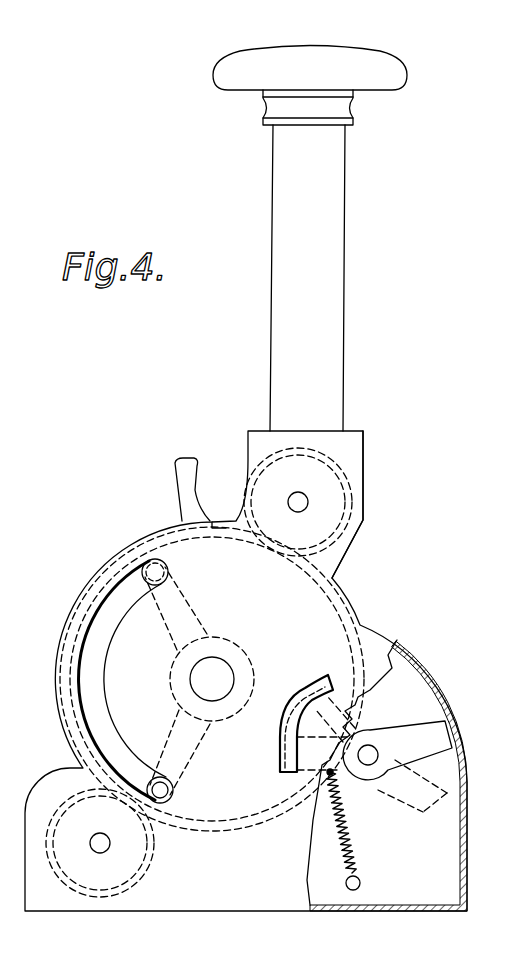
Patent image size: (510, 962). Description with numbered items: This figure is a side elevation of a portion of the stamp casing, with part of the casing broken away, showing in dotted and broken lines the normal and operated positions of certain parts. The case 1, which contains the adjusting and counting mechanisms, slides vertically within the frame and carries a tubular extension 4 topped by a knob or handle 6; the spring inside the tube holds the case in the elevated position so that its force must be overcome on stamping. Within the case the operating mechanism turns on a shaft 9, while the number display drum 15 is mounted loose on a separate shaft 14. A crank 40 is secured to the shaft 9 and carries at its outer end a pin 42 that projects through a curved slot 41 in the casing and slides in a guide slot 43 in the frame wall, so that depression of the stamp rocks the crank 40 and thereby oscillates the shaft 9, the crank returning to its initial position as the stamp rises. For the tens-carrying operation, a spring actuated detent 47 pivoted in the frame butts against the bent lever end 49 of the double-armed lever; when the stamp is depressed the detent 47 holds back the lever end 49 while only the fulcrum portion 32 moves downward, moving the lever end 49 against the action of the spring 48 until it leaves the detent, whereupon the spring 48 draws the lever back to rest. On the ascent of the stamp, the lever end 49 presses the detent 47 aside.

The case 1 is at (258, 900).
The tubular extension 4 is at (333, 254).
The knob or handle 6 is at (320, 50).
The shaft 9 is at (217, 675).
The shaft 14 is at (305, 487).
The number display drum 15 is at (350, 516).
The fulcrum portion 32 is at (368, 753).
The crank 40 is at (353, 640).
The curved slot 41 is at (92, 698).
The pin 42 is at (175, 797).
The guide slot 43 is at (100, 843).
The spring actuated detent 47 is at (184, 468).
The spring 48 is at (350, 837).
The bent lever end 49 is at (283, 752).